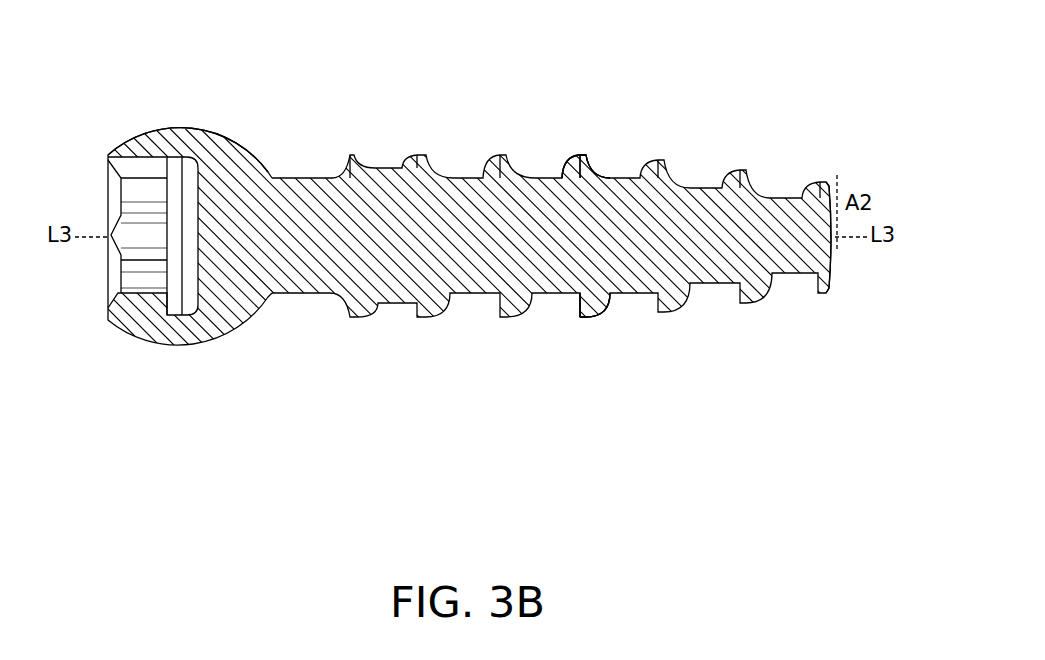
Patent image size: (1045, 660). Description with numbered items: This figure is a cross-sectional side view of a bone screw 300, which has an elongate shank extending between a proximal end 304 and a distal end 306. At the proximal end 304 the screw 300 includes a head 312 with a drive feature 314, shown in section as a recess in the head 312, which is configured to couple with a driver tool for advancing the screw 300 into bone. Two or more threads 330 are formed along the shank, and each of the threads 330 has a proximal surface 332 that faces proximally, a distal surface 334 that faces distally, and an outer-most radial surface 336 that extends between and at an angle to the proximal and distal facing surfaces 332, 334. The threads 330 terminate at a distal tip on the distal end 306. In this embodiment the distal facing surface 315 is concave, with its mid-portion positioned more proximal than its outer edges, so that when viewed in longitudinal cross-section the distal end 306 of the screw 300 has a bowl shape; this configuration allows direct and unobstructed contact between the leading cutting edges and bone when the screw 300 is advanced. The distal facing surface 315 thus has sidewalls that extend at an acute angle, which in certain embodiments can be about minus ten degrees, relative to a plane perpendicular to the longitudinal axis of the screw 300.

The bone screw 300 is at (508, 244).
The proximal end 304 is at (188, 233).
The distal end 306 is at (606, 254).
The head 312 is at (160, 128).
The drive feature 314 is at (147, 275).
The distal facing surface 315 is at (856, 271).
The threads 330 is at (585, 254).
The proximal surface 332 is at (571, 160).
The distal surface 334 is at (605, 176).
The outer-most radial surface 336 is at (583, 155).